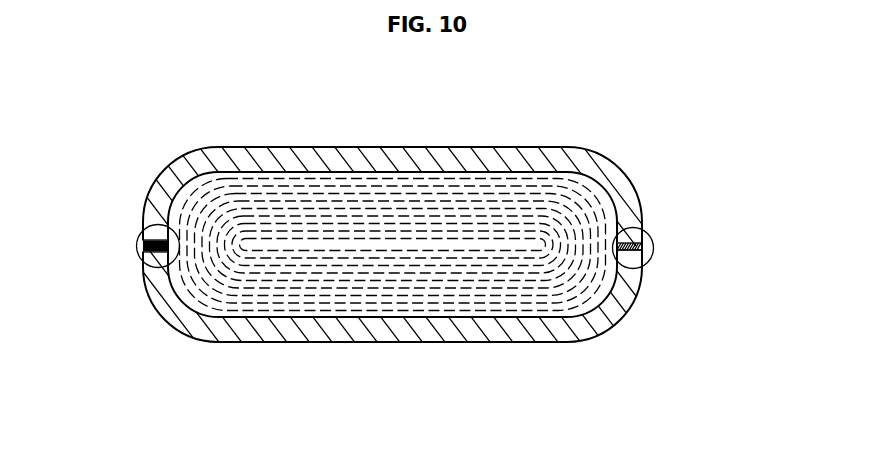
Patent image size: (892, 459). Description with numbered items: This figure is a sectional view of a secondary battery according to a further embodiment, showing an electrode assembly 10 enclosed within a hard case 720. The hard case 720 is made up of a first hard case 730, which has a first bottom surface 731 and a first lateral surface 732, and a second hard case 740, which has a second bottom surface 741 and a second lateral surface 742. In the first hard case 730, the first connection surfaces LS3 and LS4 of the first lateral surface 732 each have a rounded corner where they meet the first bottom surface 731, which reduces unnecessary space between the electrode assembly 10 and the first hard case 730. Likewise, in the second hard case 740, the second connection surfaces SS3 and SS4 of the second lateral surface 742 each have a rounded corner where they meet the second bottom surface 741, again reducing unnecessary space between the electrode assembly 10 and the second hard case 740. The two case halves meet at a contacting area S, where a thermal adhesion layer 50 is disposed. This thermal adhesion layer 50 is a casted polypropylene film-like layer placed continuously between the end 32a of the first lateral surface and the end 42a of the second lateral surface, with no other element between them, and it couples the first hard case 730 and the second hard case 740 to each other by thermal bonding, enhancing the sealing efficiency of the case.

The electrode assembly 10 is at (338, 183).
The second bottom surface 741 is at (453, 155).
The second lateral surface 742 is at (145, 229).
The second hard case 740 is at (647, 203).
The first hard case 730 is at (647, 290).
The first bottom surface 731 is at (305, 333).
The first lateral surface 732 is at (150, 290).
The hard case 720 is at (749, 195).
The thermal adhesion layer 50 is at (647, 244).
The contacting area S is at (138, 254).
The end of the second lateral surface 42a is at (142, 243).
The end of the first lateral surface 32a is at (146, 272).
The second connection surface SS3 is at (639, 202).
The second connection surface SS4 is at (144, 217).
The first connection surface LS3 is at (638, 290).
The first connection surface LS4 is at (152, 294).